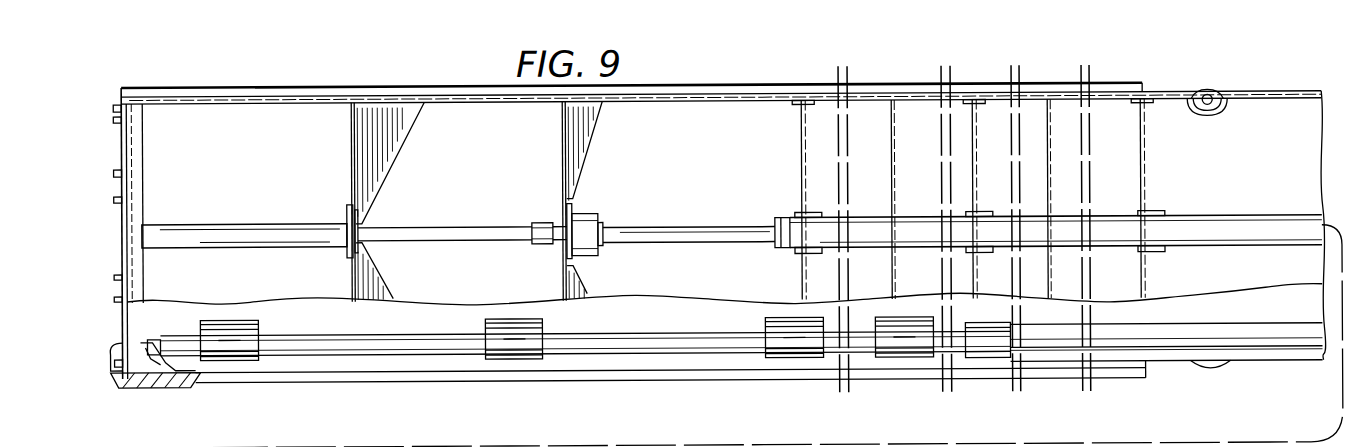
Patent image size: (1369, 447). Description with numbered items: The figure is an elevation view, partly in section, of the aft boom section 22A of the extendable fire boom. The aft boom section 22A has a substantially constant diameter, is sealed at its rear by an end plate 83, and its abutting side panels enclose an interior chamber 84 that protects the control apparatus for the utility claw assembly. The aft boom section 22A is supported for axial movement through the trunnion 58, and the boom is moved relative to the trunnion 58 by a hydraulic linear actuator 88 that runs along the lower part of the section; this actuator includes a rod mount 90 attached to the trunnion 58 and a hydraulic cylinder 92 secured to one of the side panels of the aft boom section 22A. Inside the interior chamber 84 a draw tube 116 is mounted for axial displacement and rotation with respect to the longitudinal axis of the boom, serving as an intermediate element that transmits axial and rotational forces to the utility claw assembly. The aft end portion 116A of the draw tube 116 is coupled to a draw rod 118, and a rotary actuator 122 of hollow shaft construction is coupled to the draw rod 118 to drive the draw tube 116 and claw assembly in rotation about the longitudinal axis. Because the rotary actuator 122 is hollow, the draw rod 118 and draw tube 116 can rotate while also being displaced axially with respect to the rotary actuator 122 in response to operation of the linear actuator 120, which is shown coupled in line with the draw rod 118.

The end plate 83 is at (121, 144).
The interior chamber 84 is at (1256, 112).
The rod mount 90 is at (122, 340).
The trunnion 58 is at (140, 382).
The aft boom section 22A is at (430, 372).
The hydraulic linear actuator 88 is at (745, 348).
The hydraulic cylinder 92 is at (1285, 345).
The linear actuator 120 is at (259, 222).
The rotary actuator 122 is at (592, 211).
The draw rod 118 is at (645, 227).
The aft end portion 116A is at (788, 218).
The draw tube 116 is at (1228, 218).